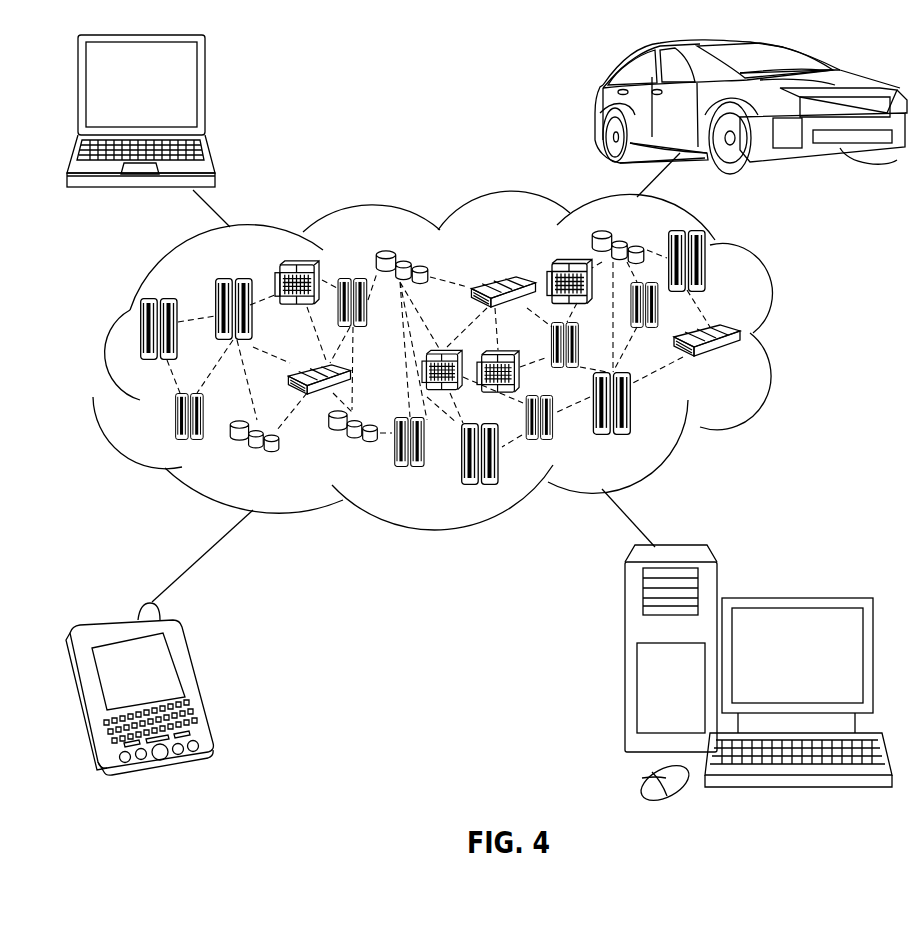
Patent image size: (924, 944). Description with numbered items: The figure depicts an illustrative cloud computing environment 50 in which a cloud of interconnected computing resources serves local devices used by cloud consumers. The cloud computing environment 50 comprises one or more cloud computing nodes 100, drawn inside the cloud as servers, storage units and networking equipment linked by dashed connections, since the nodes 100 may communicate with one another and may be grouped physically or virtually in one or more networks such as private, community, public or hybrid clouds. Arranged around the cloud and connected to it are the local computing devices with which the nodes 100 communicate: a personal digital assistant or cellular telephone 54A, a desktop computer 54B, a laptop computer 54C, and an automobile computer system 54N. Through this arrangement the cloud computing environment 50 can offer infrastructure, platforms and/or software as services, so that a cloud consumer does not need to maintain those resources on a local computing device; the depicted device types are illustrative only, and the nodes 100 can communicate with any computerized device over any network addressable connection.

The cloud computing environment 50 is at (795, 342).
The cloud computing nodes 100 is at (742, 366).
The personal digital assistant or cellular telephone 54A is at (193, 682).
The desktop computer 54B is at (793, 598).
The laptop computer 54C is at (208, 92).
The automobile computer system 54N is at (597, 108).